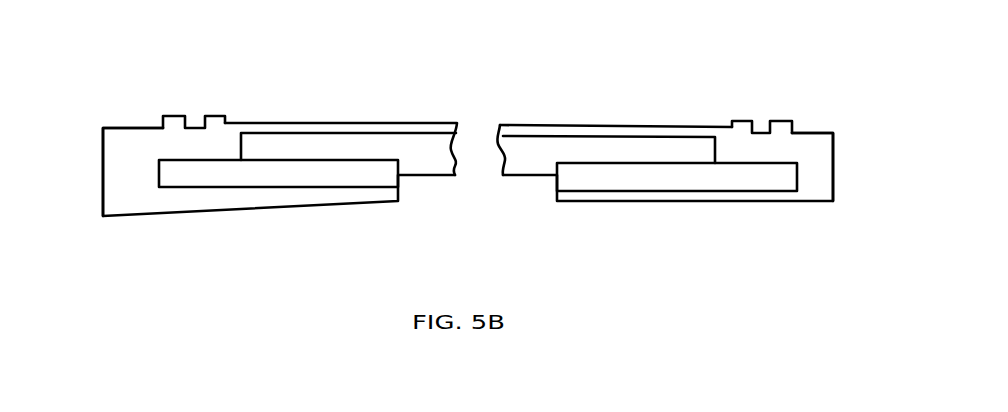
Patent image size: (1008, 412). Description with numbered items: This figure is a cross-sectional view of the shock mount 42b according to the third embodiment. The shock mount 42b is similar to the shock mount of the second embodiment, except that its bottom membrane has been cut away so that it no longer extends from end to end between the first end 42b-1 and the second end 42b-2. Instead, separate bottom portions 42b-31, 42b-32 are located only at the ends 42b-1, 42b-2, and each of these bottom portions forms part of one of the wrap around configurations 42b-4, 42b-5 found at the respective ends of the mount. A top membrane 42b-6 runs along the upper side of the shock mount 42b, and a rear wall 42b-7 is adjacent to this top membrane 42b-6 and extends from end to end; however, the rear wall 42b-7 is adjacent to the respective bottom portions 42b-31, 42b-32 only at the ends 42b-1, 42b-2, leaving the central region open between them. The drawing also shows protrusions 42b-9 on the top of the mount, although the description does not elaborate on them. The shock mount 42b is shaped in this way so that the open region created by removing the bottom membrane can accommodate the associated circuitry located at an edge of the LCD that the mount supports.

The shock mount 42b is at (139, 90).
The end 42b-1 is at (103, 199).
The end 42b-2 is at (833, 190).
The wrap around configuration 42b-4 is at (812, 158).
The wrap around configuration 42b-5 is at (118, 147).
The top membrane 42b-6 is at (380, 122).
The rear wall 42b-7 is at (503, 161).
The protrusions 42b-9 is at (177, 116).
The bottom portion 42b-31 is at (182, 211).
The bottom portion 42b-32 is at (687, 201).